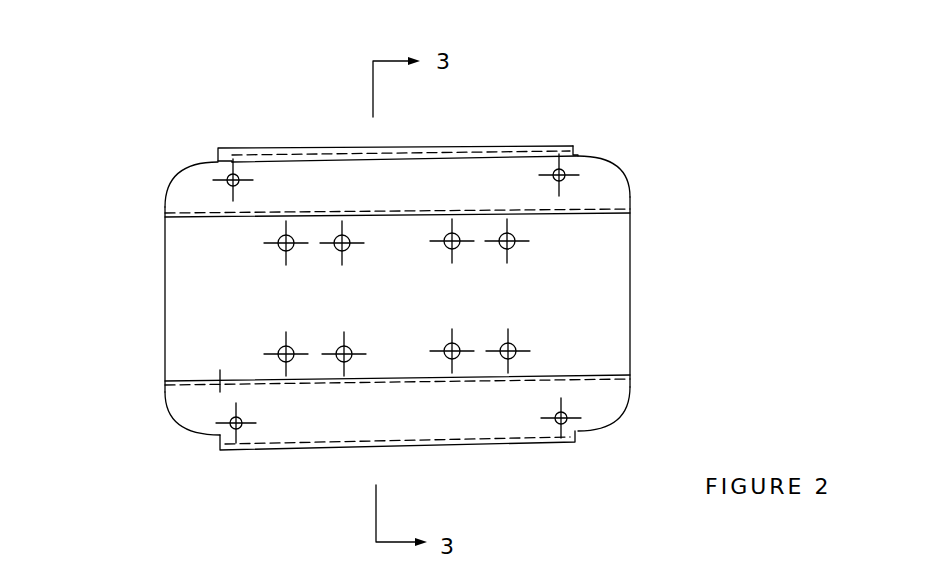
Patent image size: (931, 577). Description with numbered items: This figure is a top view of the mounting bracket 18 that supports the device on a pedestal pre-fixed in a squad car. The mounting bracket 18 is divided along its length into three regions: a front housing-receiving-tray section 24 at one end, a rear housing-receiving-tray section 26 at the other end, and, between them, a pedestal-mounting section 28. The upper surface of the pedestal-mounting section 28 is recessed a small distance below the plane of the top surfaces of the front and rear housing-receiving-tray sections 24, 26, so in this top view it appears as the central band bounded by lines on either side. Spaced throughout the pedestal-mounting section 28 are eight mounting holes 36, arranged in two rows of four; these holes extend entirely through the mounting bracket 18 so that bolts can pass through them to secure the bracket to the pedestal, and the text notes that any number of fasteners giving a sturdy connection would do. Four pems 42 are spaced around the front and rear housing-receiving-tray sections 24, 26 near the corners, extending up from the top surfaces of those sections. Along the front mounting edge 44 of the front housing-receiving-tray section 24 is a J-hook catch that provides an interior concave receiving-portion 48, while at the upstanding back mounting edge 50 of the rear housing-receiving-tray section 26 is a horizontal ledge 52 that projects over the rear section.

The mounting bracket 18 is at (638, 124).
The front housing-receiving-tray section 24 is at (612, 400).
The rear housing-receiving-tray section 26 is at (612, 193).
The pedestal-mounting section 28 is at (612, 276).
The mounting holes 36 is at (282, 244).
The pems 42 is at (227, 178).
The front mounting edge 44 is at (578, 432).
The interior concave receiving-portion 48 is at (296, 422).
The upstanding back mounting edge 50 is at (576, 156).
The horizontal ledge 52 is at (479, 148).